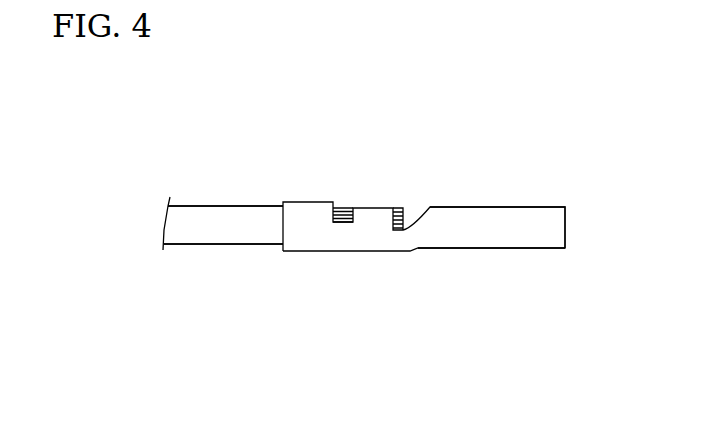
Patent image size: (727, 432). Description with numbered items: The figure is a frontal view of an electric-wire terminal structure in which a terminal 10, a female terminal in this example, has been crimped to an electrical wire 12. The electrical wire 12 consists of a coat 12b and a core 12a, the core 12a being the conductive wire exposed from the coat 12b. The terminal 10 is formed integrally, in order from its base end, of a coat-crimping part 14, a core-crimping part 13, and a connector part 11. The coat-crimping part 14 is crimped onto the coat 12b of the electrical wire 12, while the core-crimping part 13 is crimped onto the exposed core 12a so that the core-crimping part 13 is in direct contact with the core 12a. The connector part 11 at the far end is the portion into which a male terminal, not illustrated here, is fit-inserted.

The terminal 10 is at (441, 263).
The connector part 11 is at (517, 214).
The electrical wire 12 is at (210, 196).
The core 12a is at (345, 205).
The coat 12b is at (240, 227).
The core-crimping part 13 is at (380, 207).
The coat-crimping part 14 is at (307, 200).